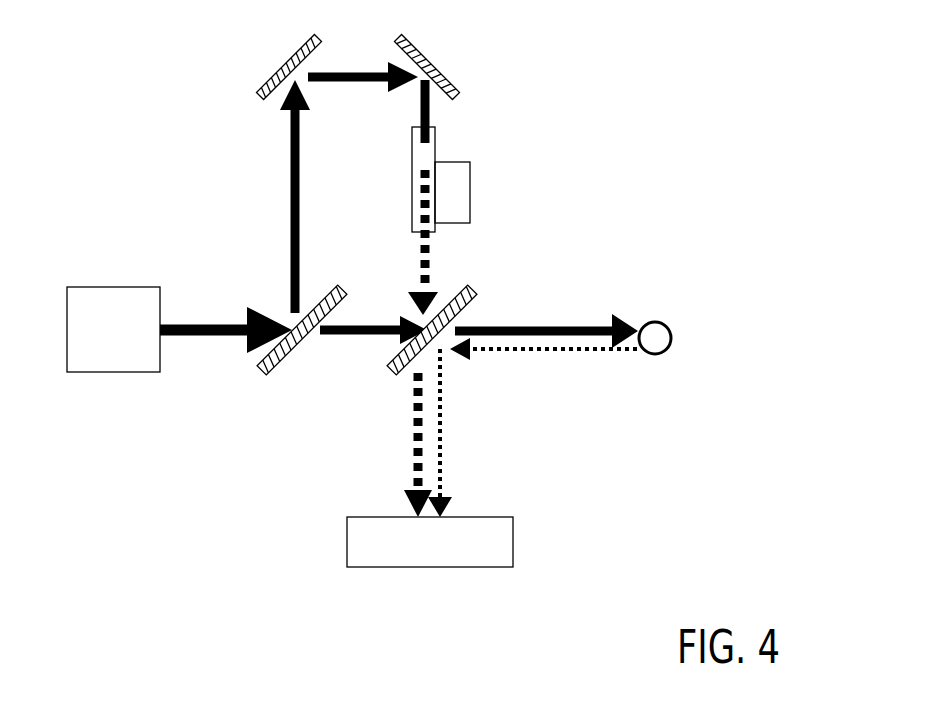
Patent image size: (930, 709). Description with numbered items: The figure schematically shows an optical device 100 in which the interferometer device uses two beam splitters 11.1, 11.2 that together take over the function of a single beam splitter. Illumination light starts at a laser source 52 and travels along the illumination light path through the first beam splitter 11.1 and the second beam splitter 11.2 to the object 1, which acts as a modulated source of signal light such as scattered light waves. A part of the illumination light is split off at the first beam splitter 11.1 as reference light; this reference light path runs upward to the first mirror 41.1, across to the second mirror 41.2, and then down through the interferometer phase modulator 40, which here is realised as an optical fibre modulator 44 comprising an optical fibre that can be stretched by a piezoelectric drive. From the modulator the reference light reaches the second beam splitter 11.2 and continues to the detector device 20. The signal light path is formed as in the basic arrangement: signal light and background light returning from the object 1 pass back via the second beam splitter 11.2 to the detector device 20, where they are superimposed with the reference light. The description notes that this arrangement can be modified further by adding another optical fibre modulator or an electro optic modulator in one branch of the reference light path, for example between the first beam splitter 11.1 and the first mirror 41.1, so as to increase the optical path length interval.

The object 1 is at (652, 357).
The first beam splitter 11.1 is at (268, 367).
The second beam splitter 11.2 is at (397, 368).
The detector device 20 is at (503, 563).
The interferometer phase modulator 40 is at (377, 138).
The first mirror 41.1 is at (280, 75).
The second mirror 41.2 is at (430, 63).
The optical fibre modulator 44 is at (470, 180).
The laser source 52 is at (138, 360).
The optical device 100 is at (247, 229).